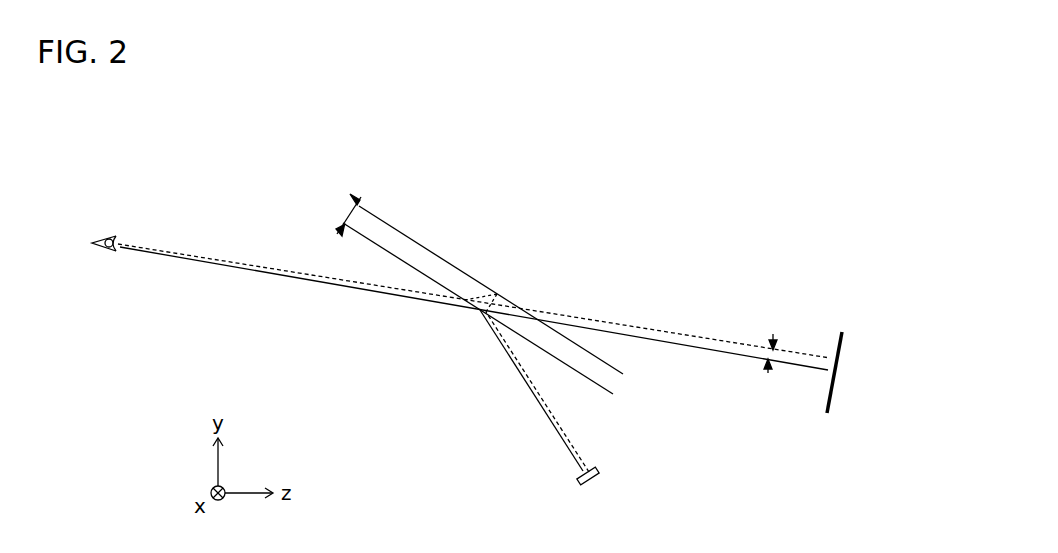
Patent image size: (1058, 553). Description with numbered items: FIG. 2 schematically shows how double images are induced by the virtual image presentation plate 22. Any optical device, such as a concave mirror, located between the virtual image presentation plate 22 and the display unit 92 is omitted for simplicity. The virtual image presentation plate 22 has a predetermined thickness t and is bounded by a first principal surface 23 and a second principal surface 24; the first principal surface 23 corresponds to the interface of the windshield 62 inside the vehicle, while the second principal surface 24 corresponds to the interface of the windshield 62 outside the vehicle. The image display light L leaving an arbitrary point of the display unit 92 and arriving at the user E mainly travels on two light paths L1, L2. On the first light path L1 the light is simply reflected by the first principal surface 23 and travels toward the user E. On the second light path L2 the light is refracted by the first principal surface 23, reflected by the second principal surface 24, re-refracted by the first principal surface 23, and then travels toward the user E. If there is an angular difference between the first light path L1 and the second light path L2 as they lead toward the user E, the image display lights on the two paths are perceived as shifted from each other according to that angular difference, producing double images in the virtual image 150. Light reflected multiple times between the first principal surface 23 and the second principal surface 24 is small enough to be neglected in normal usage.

The virtual image presentation plate 22 is at (459, 268).
The windshield 62 is at (459, 300).
The first principal surface 23 is at (365, 237).
The second principal surface 24 is at (399, 230).
The thickness t is at (345, 212).
The user E is at (104, 232).
The image display light L is at (526, 413).
The first light path L1 is at (434, 299).
The second light path L2 is at (394, 286).
The virtual image 150 is at (845, 305).
The display unit 92 is at (600, 471).